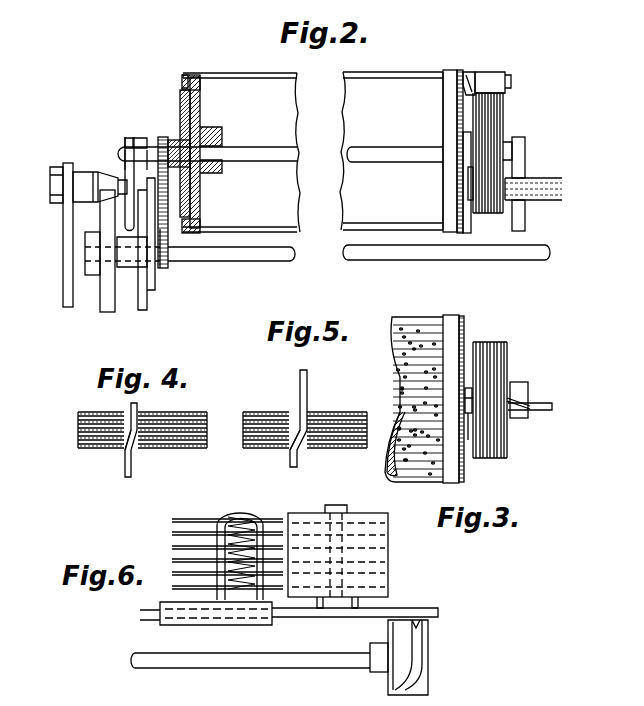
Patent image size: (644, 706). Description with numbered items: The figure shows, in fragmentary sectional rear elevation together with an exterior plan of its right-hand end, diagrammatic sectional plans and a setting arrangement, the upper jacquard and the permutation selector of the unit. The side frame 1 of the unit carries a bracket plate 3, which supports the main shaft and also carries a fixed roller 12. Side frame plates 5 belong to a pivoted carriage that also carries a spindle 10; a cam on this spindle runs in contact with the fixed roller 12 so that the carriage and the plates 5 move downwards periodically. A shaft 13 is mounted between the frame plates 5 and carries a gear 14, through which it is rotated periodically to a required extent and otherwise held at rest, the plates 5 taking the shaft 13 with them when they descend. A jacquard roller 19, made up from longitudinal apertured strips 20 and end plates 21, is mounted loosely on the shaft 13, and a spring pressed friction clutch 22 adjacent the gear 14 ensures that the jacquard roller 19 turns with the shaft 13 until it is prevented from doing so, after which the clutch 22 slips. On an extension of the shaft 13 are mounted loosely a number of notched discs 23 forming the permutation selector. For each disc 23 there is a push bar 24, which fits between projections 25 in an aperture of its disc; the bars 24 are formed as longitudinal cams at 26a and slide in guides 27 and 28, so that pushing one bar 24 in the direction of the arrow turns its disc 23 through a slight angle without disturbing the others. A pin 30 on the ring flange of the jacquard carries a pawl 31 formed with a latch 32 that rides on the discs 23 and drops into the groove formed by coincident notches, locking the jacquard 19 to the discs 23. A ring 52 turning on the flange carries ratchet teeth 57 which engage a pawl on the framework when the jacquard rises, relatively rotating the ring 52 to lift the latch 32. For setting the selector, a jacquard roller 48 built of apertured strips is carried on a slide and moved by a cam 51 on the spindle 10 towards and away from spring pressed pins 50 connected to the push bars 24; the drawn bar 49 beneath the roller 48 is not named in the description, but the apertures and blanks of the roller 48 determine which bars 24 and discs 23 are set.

In FIG. 2, the side frame 1 is at (107, 313).
In FIG. 2, the bracket plate 3 is at (62, 251).
In FIG. 2, the side frame plate 5 is at (128, 175).
In FIG. 2, the spindle 10 is at (279, 255).
In FIG. 6, the spindle 10 is at (322, 658).
In FIG. 2, the fixed roller 12 is at (107, 178).
In FIG. 2, the shaft 13 is at (263, 150).
In FIG. 2, the gear 14 is at (160, 137).
In FIG. 2, the jacquard roller 19 is at (240, 73).
In FIG. 3, the jacquard roller 19 is at (392, 340).
In FIG. 2, the apertured strip 20 is at (393, 72).
In FIG. 3, the apertured strip 20 is at (410, 330).
In FIG. 2, the end plate 21 is at (186, 80).
In FIG. 2, the friction clutch 22 is at (178, 100).
In FIG. 2, the disc 23 is at (490, 121).
In FIG. 3, the disc 23 is at (485, 342).
In FIG. 4, the disc 23 is at (78, 428).
In FIG. 5, the disc 23 is at (250, 433).
In FIG. 2, the push bar 24 is at (530, 183).
In FIG. 3, the push bar 24 is at (540, 411).
In FIG. 4, the push bar 24 is at (138, 467).
In FIG. 5, the push bar 24 is at (307, 462).
In FIG. 2, the projection 25 is at (168, 232).
In FIG. 3, the longitudinal cam 26a is at (525, 400).
In FIG. 4, the longitudinal cam 26a is at (111, 460).
In FIG. 5, the longitudinal cam 26a is at (295, 412).
In FIG. 2, the guide 27 is at (518, 224).
In FIG. 3, the guide 27 is at (519, 382).
In FIG. 2, the guide 28 is at (470, 232).
In FIG. 3, the guide 28 is at (468, 440).
In FIG. 2, the pin 30 is at (480, 68).
In FIG. 2, the pawl 31 is at (490, 80).
In FIG. 2, the latch 32 is at (500, 93).
In FIG. 6, the jacquard roller 48 is at (388, 515).
In FIG. 6, the bar 49 is at (438, 613).
In FIG. 6, the spring pressed pin 50 is at (268, 530).
In FIG. 6, the cam 51 is at (415, 650).
In FIG. 2, the ring 52 is at (458, 70).
In FIG. 3, the ring 52 is at (461, 315).
In FIG. 2, the ratchet teeth 57 is at (455, 107).